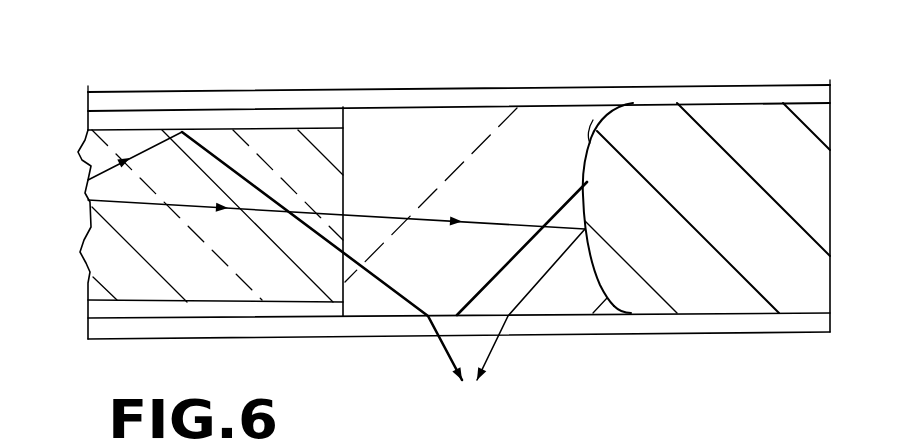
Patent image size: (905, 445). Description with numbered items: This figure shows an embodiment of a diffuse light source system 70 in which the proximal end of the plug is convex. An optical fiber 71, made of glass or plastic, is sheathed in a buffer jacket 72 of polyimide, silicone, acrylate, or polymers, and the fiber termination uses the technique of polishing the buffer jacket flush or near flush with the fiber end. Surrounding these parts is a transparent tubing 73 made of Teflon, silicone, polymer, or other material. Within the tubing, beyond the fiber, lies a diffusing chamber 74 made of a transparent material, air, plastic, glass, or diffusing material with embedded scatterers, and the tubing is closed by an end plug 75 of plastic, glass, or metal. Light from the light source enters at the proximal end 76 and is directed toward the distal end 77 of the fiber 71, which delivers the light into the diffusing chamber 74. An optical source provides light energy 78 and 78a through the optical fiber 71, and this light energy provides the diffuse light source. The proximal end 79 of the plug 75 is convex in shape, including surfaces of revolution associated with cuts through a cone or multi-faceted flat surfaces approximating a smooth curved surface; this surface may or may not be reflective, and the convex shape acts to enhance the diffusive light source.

The system 70 is at (393, 53).
The optical fiber 71 is at (116, 264).
The buffer jacket 72 is at (88, 122).
The transparent tubing 73 is at (453, 92).
The diffusing chamber 74 is at (543, 185).
The end plug 75 is at (750, 207).
The proximal end 76 is at (86, 243).
The distal end 77 is at (360, 318).
The light energy 78 is at (492, 348).
The light energy 78a is at (443, 353).
The proximal end of the plug 79 is at (593, 120).